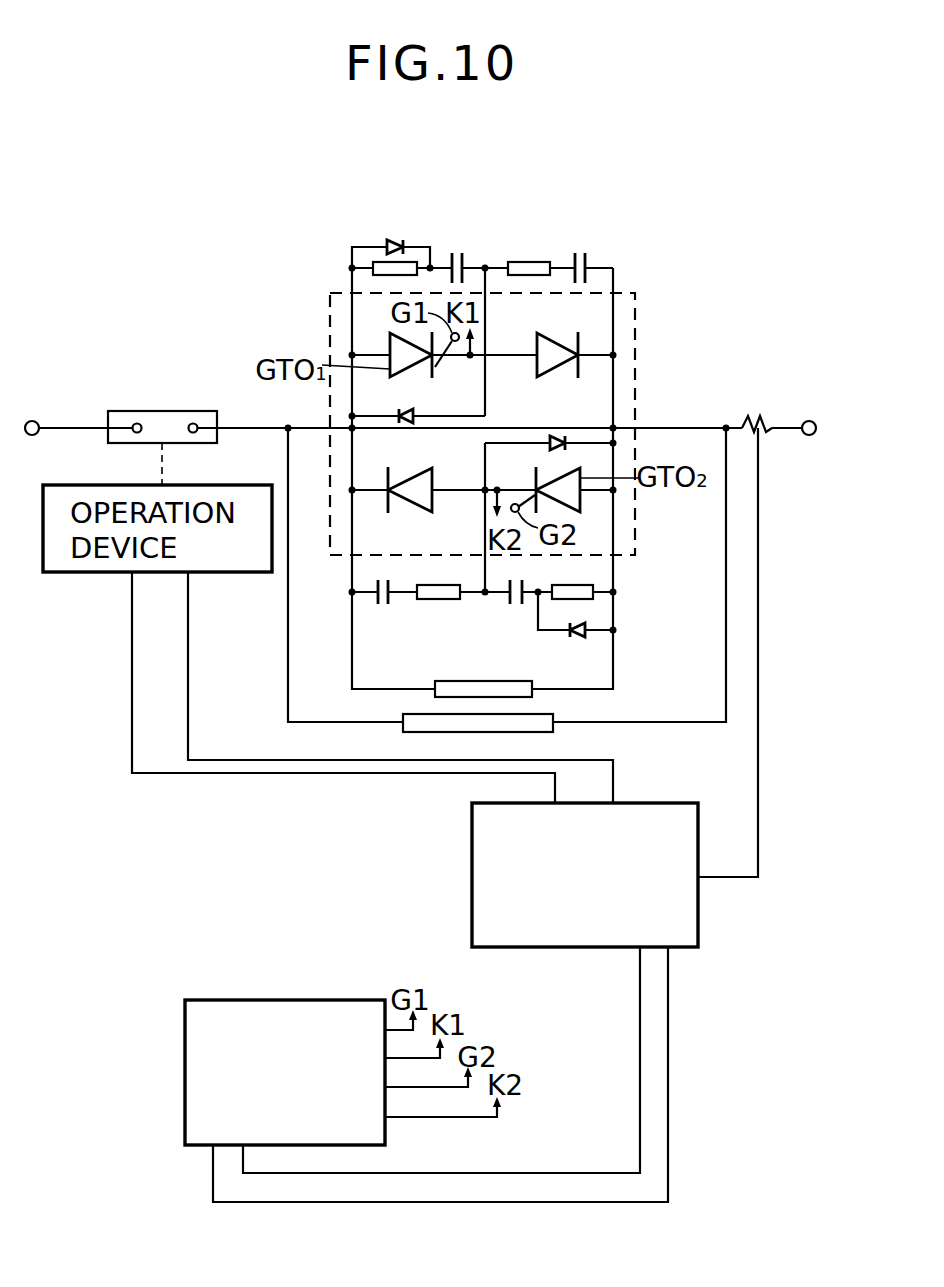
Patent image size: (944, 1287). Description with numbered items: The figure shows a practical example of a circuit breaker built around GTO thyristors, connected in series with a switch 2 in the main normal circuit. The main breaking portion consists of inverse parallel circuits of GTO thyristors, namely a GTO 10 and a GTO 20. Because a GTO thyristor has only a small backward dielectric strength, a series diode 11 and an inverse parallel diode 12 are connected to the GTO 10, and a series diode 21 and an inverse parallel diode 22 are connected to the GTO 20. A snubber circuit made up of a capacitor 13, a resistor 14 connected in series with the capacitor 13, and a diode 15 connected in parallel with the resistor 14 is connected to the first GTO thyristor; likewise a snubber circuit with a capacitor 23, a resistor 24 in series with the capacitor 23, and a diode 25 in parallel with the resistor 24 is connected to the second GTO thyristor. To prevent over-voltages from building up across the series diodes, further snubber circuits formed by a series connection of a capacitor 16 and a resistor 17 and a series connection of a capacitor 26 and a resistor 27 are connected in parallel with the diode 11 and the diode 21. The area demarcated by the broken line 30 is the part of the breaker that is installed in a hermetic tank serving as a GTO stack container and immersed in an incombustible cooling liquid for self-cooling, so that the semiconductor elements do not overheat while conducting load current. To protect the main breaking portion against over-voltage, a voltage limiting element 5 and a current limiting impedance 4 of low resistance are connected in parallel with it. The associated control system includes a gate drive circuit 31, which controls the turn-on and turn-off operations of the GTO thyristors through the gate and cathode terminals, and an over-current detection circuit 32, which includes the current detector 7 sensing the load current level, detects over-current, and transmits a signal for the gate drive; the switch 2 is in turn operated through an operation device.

The switch 2 is at (182, 411).
The current limiting impedance 4 is at (516, 681).
The voltage limiting element 5 is at (545, 714).
The current detector 7 is at (757, 422).
The GTO thyristor 10 is at (388, 342).
The series diode 11 is at (538, 378).
The inverse parallel diode 12 is at (412, 414).
The capacitor 13 is at (457, 252).
The resistor 14 is at (375, 268).
The diode 15 is at (395, 240).
The capacitor 16 is at (580, 252).
The resistor 17 is at (538, 262).
The GTO thyristor 20 is at (580, 505).
The series diode 21 is at (412, 470).
The inverse parallel diode 22 is at (557, 438).
The capacitor 23 is at (513, 606).
The resistor 24 is at (587, 586).
The diode 25 is at (580, 636).
The capacitor 26 is at (382, 606).
The resistor 27 is at (435, 601).
The broken line 30 is at (637, 390).
The gate drive circuit 31 is at (185, 1107).
The over-current detection circuit 32 is at (698, 917).